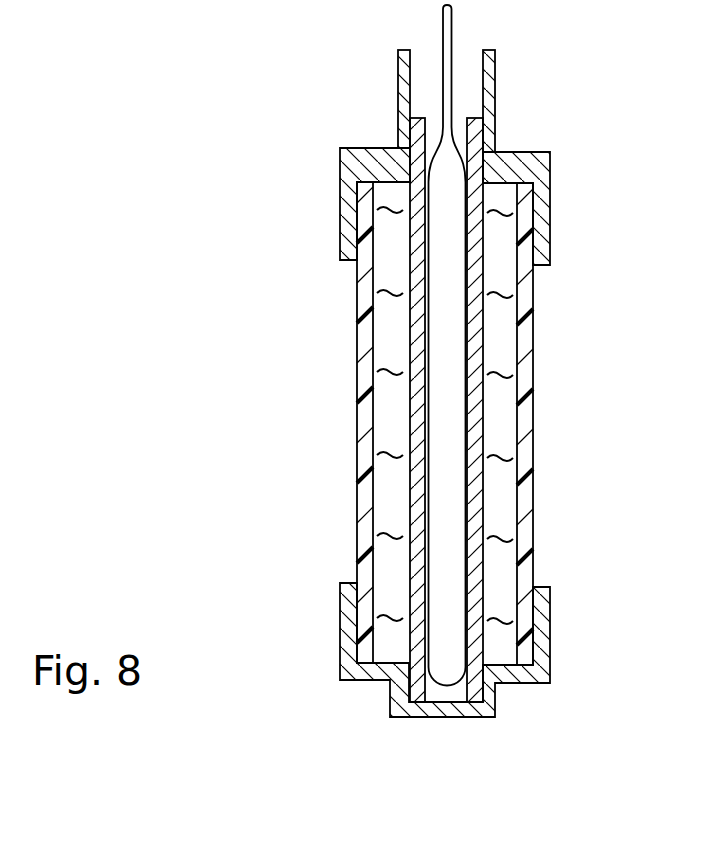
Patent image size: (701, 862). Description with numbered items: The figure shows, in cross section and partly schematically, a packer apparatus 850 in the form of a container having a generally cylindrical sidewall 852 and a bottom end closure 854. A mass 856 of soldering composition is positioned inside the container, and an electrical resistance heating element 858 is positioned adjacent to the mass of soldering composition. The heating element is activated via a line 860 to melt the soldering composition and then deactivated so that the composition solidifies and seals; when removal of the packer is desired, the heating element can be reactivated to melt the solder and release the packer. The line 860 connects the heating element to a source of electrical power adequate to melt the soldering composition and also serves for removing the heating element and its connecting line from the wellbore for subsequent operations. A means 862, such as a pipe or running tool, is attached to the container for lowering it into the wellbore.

The packer apparatus 850 is at (327, 213).
The sidewall 852 is at (362, 413).
The bottom end closure 854 is at (350, 680).
The mass of soldering composition 856 is at (393, 362).
The electrical resistance heating element 858 is at (438, 605).
The line 860 is at (442, 12).
The means for lowering the container 862 is at (396, 99).